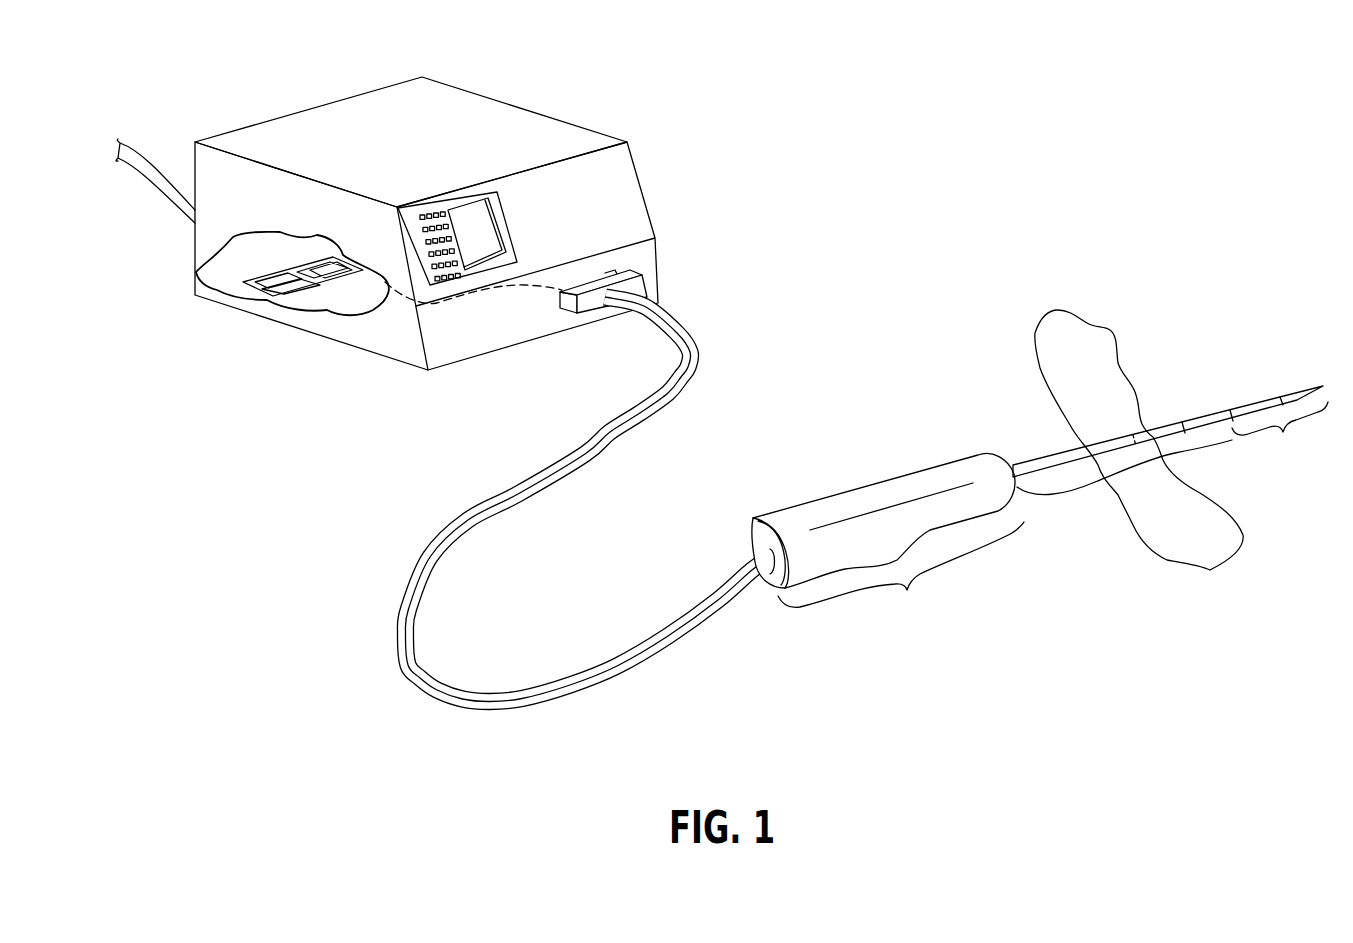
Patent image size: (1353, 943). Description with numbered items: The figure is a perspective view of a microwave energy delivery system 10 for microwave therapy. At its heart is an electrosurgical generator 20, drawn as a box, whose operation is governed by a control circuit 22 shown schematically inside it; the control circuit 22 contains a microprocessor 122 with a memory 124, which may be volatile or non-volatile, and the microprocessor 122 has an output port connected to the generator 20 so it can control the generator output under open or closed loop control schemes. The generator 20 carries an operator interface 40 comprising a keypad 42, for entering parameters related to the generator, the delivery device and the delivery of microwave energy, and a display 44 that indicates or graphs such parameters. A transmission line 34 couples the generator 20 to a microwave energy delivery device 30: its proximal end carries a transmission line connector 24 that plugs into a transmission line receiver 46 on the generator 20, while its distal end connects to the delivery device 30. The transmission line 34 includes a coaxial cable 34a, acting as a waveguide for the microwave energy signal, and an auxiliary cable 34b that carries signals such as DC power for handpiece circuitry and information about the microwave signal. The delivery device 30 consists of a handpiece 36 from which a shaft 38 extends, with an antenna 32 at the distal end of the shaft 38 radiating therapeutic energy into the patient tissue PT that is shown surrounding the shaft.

The microwave energy delivery system 10 is at (882, 260).
The electrosurgical generator 20 is at (252, 114).
The control circuit 22 is at (275, 260).
The transmission line connector 24 is at (640, 285).
The microwave energy delivery device 30 is at (859, 471).
The antenna 32 is at (1280, 434).
The transmission line 34 is at (472, 495).
The coaxial cable 34a is at (445, 682).
The auxiliary cable 34b is at (398, 668).
The handpiece 36 is at (901, 572).
The shaft 38 is at (1133, 484).
The operator interface 40 is at (468, 286).
The keypad 42 is at (428, 222).
The display 44 is at (468, 212).
The transmission line receiver 46 is at (610, 272).
The microprocessor 122 is at (288, 300).
The memory 124 is at (275, 292).
The patient tissue PT is at (1055, 323).